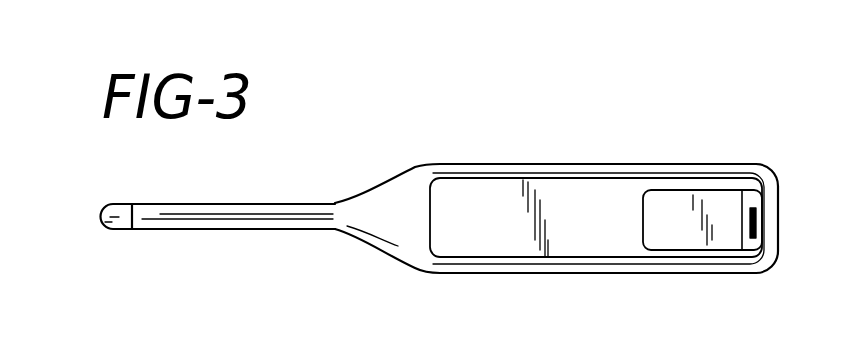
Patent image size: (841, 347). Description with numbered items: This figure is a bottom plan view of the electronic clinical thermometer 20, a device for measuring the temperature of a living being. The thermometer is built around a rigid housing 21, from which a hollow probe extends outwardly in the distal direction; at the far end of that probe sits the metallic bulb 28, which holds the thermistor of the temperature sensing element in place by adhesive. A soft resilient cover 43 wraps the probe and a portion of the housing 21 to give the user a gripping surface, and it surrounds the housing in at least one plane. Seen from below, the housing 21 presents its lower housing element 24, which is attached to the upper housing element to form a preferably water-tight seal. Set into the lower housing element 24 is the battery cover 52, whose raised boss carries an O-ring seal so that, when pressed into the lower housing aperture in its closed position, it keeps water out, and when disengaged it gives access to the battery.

The electronic clinical thermometer 20 is at (594, 135).
The metallic bulb 28 is at (113, 204).
The soft resilient cover 43 is at (398, 234).
The lower housing element 24 is at (495, 243).
The rigid housing 21 is at (557, 235).
The battery cover 52 is at (688, 242).